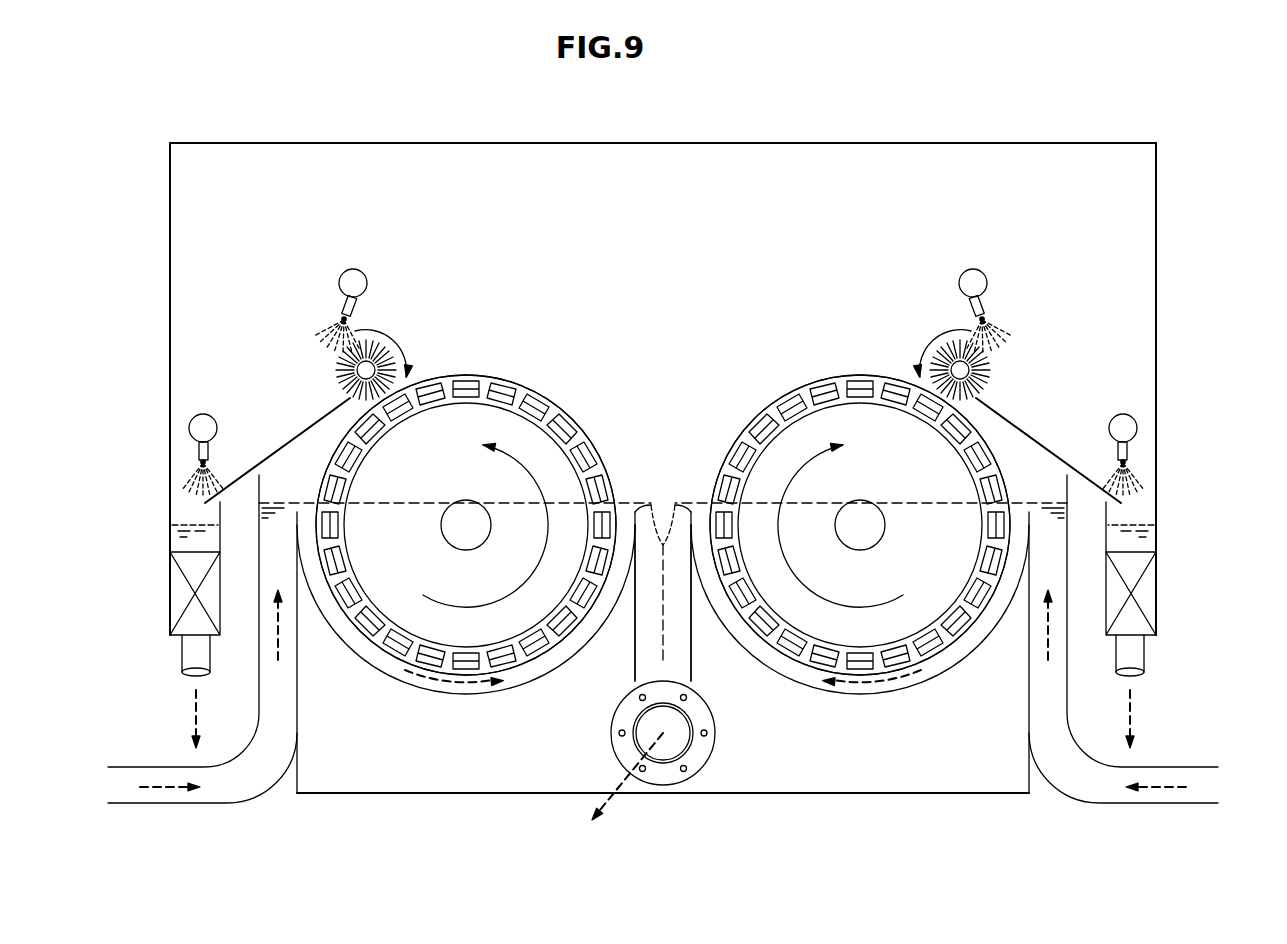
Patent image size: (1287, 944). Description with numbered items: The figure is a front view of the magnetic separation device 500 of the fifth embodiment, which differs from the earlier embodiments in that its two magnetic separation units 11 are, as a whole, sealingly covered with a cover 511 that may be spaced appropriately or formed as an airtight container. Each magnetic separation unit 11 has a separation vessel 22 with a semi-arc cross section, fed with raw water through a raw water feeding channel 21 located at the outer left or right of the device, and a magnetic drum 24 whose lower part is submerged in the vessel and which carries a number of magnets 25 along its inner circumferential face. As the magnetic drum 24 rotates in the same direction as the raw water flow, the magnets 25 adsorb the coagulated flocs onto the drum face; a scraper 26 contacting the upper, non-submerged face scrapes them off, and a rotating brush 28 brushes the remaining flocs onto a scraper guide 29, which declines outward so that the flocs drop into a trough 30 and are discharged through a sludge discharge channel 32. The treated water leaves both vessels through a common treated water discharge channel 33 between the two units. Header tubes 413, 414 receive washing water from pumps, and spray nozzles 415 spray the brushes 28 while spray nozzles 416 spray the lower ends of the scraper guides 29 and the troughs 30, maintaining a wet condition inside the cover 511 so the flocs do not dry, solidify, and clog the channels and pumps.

The magnetic separation device 500 is at (1143, 130).
The cover 511 is at (1156, 210).
The magnetic separation unit 11 is at (475, 287).
The raw water feeding channel 21 is at (166, 804).
The separation vessel 22 is at (372, 660).
The magnetic drum 24 is at (538, 392).
The magnets 25 is at (567, 627).
The scraper 26 is at (350, 398).
The brush 28 is at (383, 345).
The scraper guide 29 is at (277, 452).
The trough 30 is at (170, 590).
The sludge discharge channel 32 is at (182, 663).
The treated water discharge channel 33 is at (696, 610).
The header tube 413 is at (353, 269).
The header tube 414 is at (200, 413).
The spray nozzle 415 is at (343, 302).
The spray nozzle 416 is at (199, 450).